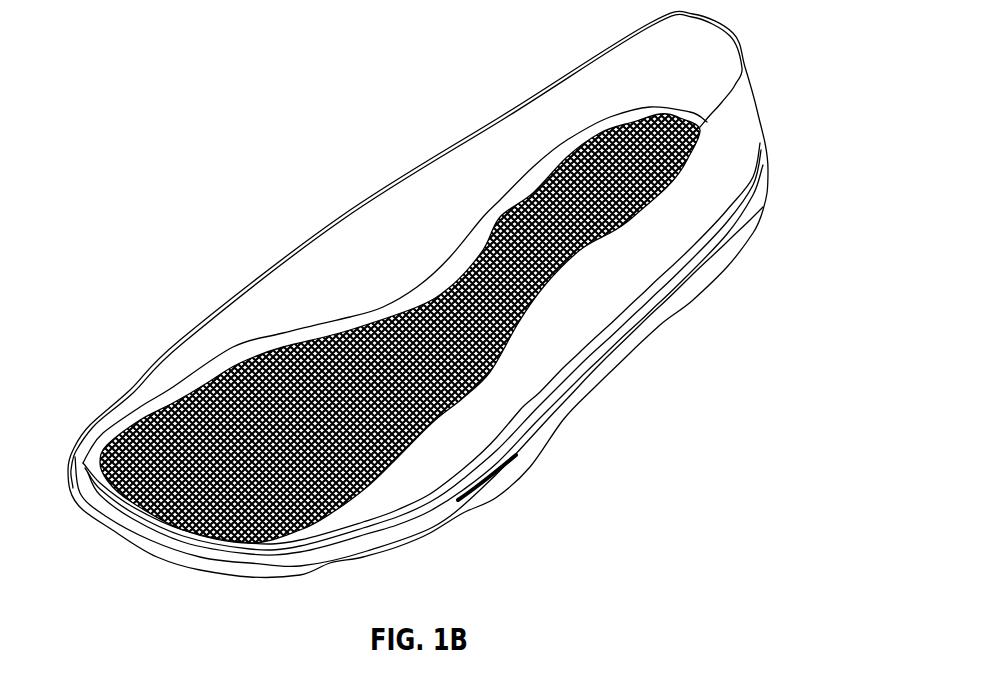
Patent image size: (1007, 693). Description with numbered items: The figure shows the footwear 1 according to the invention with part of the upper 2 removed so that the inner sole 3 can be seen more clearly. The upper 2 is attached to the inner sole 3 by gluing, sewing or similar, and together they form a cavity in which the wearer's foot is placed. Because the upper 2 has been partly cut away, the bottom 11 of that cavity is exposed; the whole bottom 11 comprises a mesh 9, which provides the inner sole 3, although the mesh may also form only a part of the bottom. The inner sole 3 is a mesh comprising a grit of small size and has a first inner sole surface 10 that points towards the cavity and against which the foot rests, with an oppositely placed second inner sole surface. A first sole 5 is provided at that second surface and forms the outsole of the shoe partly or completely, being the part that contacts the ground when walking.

The footwear 1 is at (157, 50).
The upper 2 is at (272, 278).
The inner sole 3 is at (630, 120).
The first sole 5 is at (717, 258).
The mesh 9 is at (460, 410).
The first inner sole surface 10 is at (157, 408).
The bottom 11 is at (278, 347).